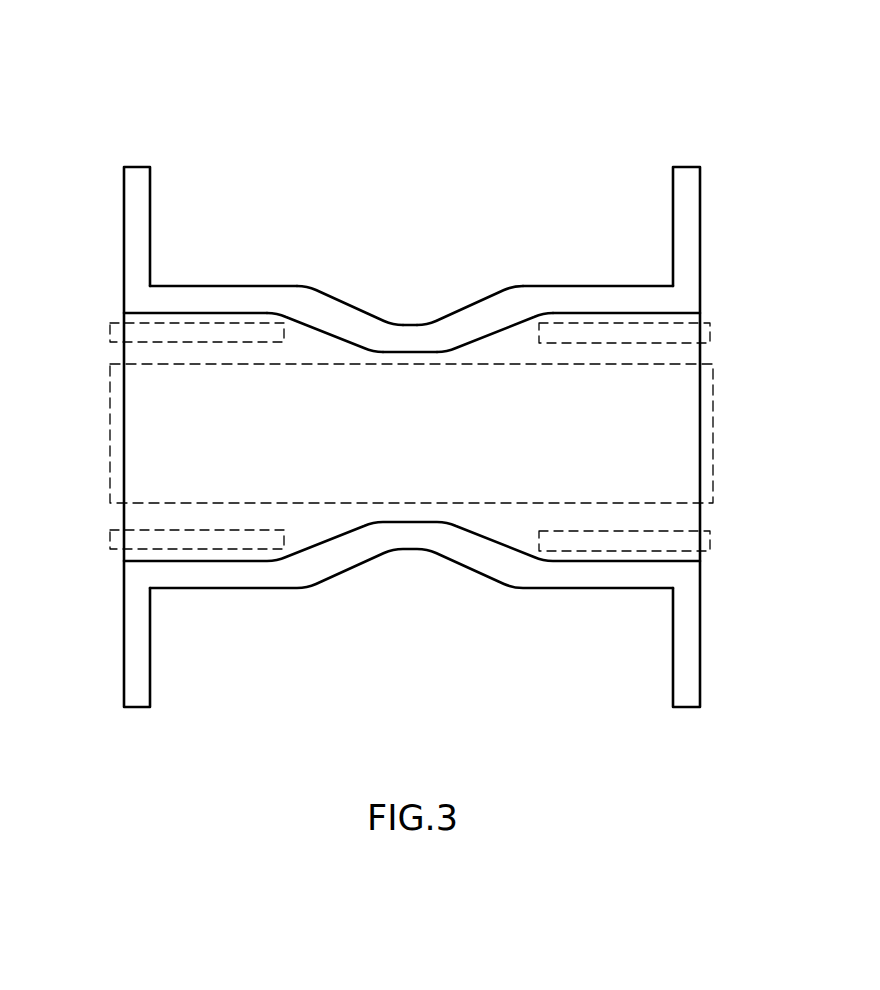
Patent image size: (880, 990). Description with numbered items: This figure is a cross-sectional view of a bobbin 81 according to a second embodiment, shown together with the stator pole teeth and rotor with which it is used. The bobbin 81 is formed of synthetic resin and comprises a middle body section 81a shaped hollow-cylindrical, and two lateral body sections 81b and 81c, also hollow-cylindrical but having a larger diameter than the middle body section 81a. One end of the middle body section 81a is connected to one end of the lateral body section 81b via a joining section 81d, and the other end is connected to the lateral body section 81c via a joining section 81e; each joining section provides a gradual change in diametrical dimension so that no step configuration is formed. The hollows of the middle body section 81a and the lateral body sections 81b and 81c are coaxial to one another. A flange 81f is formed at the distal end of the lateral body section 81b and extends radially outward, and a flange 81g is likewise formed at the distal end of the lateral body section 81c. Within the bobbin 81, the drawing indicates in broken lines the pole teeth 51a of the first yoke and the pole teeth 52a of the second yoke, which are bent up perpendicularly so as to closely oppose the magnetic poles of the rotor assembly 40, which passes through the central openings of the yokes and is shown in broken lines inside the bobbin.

The bobbin 81 is at (131, 153).
The middle body section 81a is at (417, 325).
The lateral body section 81b is at (228, 286).
The lateral body section 81c is at (588, 286).
The joining section 81d is at (307, 325).
The joining section 81e is at (510, 327).
The flange 81f is at (150, 190).
The flange 81g is at (700, 207).
The pole teeth 51a is at (153, 322).
The pole teeth 52a is at (708, 323).
The rotor assembly 40 is at (110, 410).